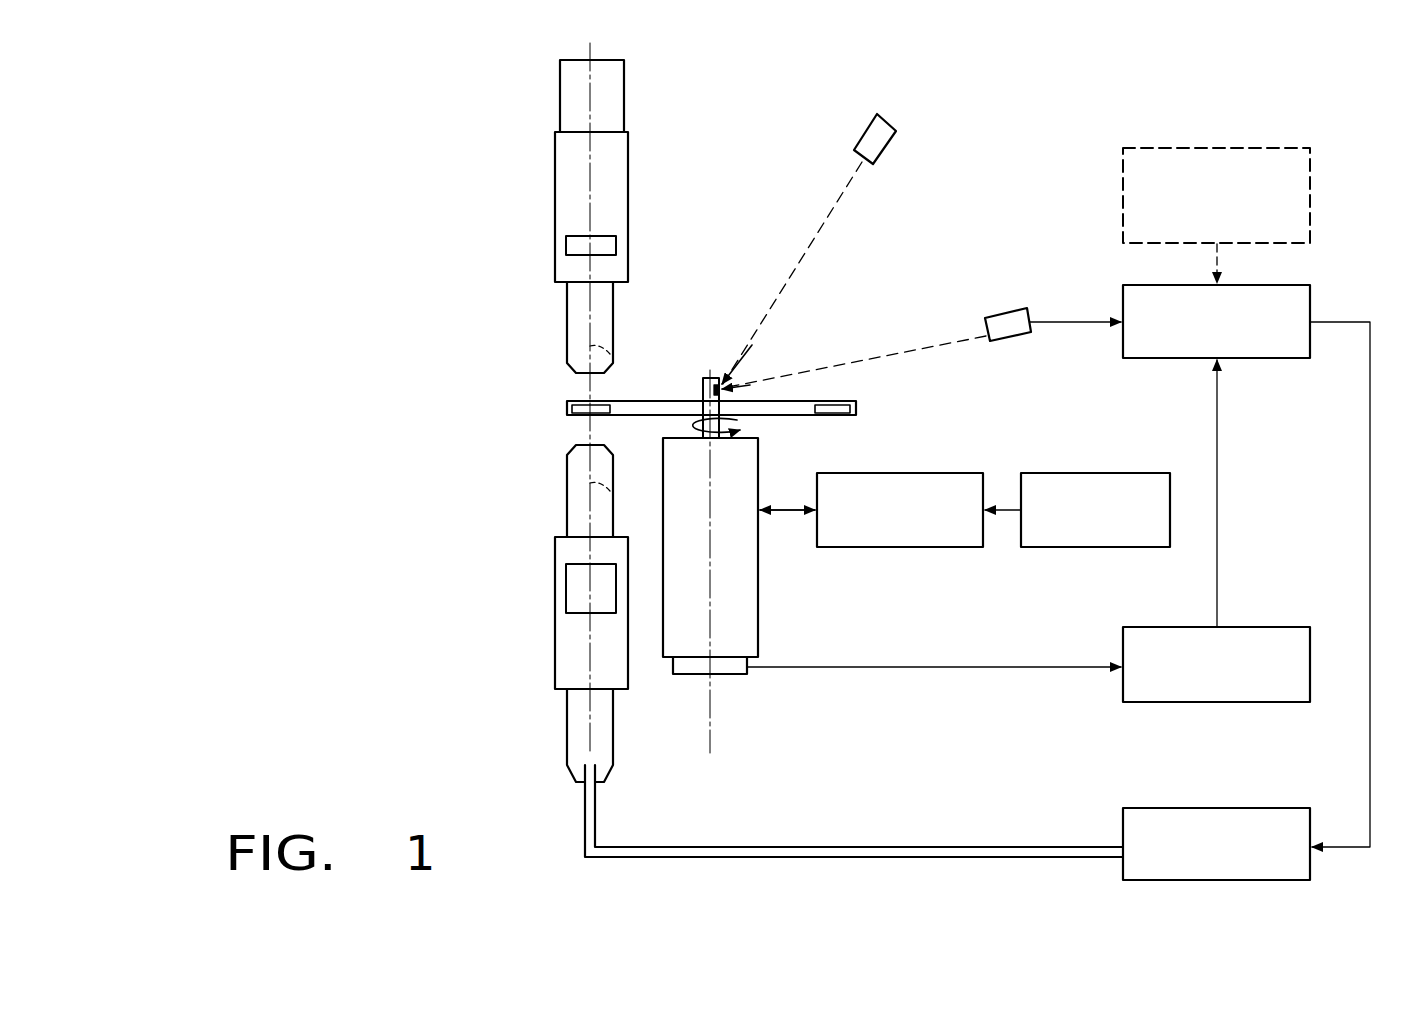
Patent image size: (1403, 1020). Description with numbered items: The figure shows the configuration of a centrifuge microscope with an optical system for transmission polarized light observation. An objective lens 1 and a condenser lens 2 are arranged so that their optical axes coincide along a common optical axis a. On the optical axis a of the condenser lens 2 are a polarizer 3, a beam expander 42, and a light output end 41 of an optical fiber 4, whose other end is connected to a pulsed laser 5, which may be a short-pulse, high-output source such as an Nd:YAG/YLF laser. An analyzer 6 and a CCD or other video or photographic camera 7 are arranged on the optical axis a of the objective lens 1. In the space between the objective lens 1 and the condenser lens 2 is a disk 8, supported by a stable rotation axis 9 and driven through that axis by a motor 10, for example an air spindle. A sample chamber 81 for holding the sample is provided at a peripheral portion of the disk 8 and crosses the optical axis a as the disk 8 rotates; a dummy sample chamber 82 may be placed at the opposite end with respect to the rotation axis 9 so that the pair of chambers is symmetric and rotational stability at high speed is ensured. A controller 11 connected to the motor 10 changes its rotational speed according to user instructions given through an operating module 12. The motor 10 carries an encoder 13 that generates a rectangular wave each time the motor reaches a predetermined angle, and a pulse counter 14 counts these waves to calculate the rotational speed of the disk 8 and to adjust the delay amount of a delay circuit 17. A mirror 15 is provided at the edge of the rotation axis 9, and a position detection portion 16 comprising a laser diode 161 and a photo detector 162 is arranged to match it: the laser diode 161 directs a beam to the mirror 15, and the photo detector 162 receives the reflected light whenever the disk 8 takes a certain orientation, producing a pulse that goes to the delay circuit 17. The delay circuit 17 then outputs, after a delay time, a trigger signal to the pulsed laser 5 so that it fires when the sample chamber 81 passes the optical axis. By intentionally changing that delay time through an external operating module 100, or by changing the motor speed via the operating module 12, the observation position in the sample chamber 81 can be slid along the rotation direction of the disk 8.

The objective lens 1 is at (567, 332).
The condenser lens 2 is at (567, 505).
The polarizer 3 is at (566, 578).
The optical fiber 4 is at (818, 805).
The pulsed laser 5 is at (1147, 812).
The analyzer 6 is at (566, 245).
The camera 7 is at (560, 91).
The disk 8 is at (718, 388).
The rotation axis 9 is at (738, 427).
The motor 10 is at (750, 641).
The controller 11 is at (953, 472).
The operating module 12 is at (1118, 472).
The encoder 13 is at (726, 670).
The pulse counter 14 is at (1253, 628).
The mirror 15 is at (716, 378).
The position detection portion 16 is at (922, 251).
The delay circuit 17 is at (1310, 293).
The light output end 41 is at (585, 760).
The beam expander 42 is at (567, 714).
The sample chamber 81 is at (567, 408).
The dummy sample chamber 82 is at (856, 405).
The external operating module 100 is at (1310, 170).
The laser diode 161 is at (889, 135).
The photo detector 162 is at (922, 304).
The optical axis a is at (612, 353).